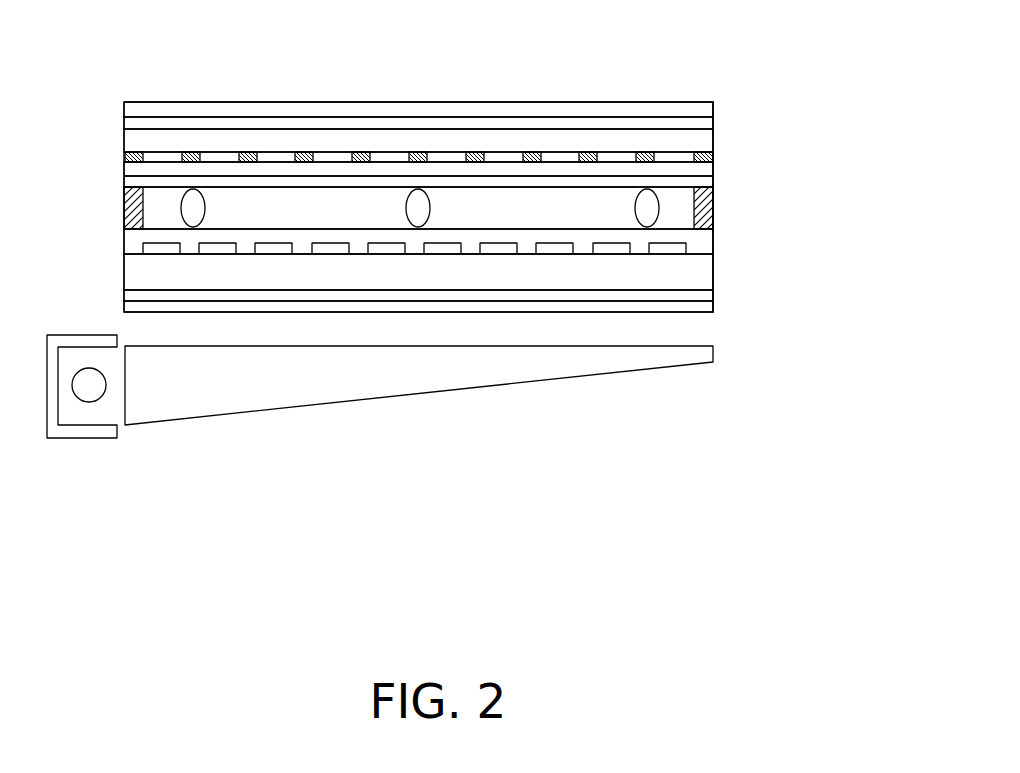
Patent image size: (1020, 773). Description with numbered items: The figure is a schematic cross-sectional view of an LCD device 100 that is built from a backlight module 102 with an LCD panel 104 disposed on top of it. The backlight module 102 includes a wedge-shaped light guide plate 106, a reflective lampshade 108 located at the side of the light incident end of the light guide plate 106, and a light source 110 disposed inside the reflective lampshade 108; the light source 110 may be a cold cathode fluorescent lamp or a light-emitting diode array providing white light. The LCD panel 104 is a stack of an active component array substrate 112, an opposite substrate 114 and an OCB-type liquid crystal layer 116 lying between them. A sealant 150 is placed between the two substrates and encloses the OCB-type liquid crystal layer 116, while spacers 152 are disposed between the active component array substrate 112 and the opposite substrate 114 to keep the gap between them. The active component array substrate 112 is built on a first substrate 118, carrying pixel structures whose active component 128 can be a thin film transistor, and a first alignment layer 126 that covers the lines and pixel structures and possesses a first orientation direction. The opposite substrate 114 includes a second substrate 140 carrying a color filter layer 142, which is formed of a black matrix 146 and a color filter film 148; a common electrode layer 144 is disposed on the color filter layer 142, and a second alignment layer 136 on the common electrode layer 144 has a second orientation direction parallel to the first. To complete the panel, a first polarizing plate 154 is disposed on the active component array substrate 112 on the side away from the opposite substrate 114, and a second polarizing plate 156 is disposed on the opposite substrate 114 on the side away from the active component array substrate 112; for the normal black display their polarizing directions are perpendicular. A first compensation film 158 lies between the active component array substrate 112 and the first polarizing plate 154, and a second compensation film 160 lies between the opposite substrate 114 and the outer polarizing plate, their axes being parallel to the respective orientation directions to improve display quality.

The LCD device 100 is at (797, 512).
The backlight module 102 is at (50, 532).
The LCD panel 104 is at (117, 103).
The light guide plate 106 is at (215, 393).
The reflective lampshade 108 is at (77, 433).
The light source 110 is at (88, 392).
The active component array substrate 112 is at (797, 242).
The opposite substrate 114 is at (841, 33).
The OCB-type liquid crystal layer 116 is at (610, 198).
The first substrate 118 is at (703, 270).
The first alignment layer 126 is at (703, 235).
The active component 128 is at (677, 247).
The second alignment layer 136 is at (703, 180).
The second substrate 140 is at (703, 118).
The color filter layer 142 is at (797, 63).
The common electrode layer 144 is at (703, 167).
The black matrix 146 is at (685, 150).
The color filter film 148 is at (703, 129).
The sealant 150 is at (703, 213).
The spacers 152 is at (422, 200).
The first polarizing plate 154 is at (704, 303).
The second polarizing plate 156 is at (702, 108).
The first compensation film 158 is at (704, 292).
The second compensation film 160 is at (703, 107).